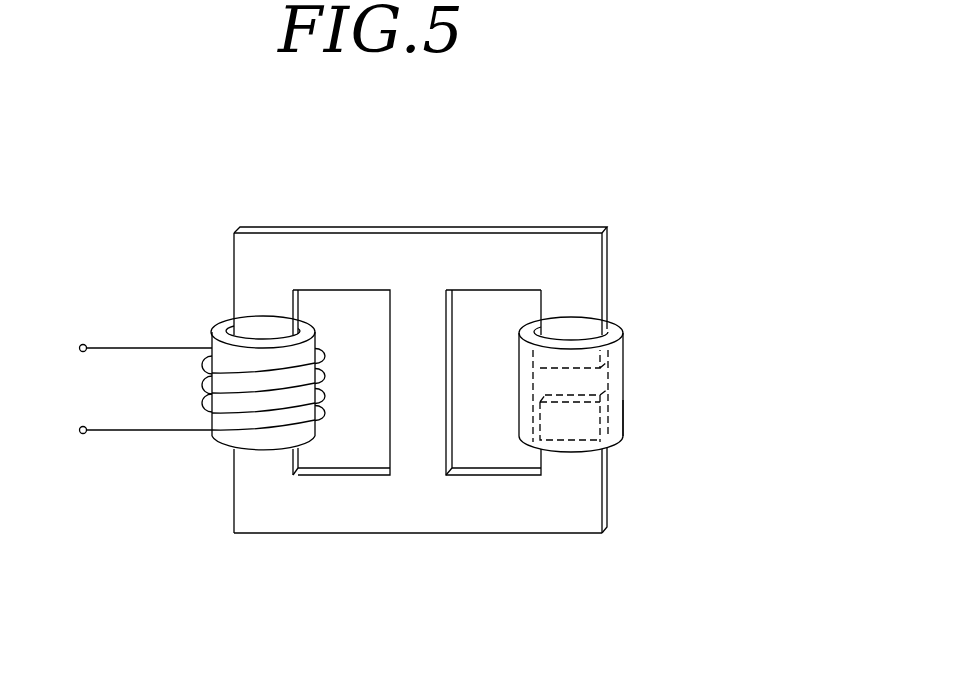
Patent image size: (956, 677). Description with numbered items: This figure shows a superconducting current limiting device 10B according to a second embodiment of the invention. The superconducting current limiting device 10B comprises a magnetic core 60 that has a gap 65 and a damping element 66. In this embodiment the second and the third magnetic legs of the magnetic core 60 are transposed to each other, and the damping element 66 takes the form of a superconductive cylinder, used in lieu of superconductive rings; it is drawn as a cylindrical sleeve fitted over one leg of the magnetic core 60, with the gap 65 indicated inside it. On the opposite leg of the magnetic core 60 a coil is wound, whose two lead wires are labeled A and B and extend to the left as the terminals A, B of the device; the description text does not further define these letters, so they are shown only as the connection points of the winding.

The superconducting current limiting device 10B is at (690, 143).
The magnetic core 60 is at (612, 278).
The gap 65 is at (602, 382).
The damping element 66 is at (623, 430).
The terminal A is at (129, 346).
The terminal B is at (129, 429).